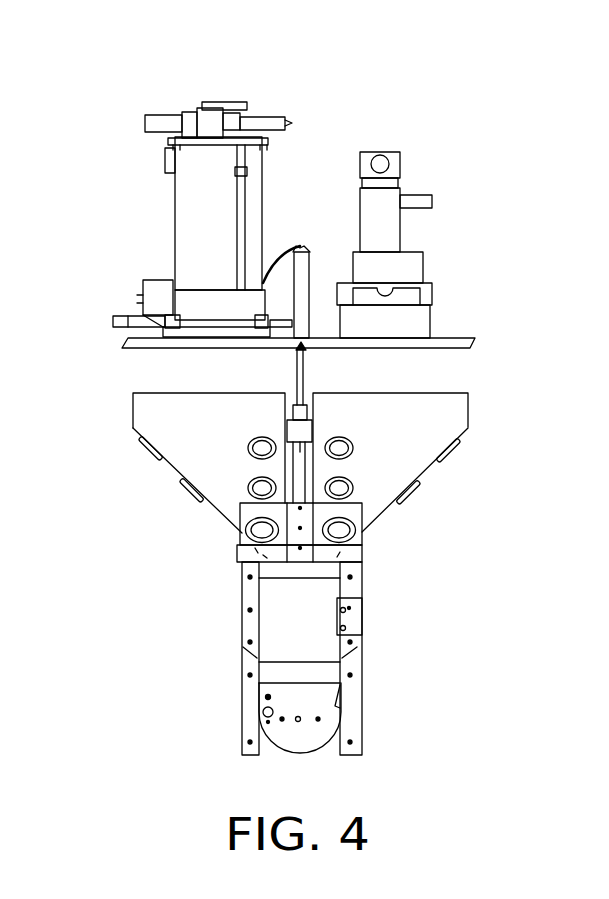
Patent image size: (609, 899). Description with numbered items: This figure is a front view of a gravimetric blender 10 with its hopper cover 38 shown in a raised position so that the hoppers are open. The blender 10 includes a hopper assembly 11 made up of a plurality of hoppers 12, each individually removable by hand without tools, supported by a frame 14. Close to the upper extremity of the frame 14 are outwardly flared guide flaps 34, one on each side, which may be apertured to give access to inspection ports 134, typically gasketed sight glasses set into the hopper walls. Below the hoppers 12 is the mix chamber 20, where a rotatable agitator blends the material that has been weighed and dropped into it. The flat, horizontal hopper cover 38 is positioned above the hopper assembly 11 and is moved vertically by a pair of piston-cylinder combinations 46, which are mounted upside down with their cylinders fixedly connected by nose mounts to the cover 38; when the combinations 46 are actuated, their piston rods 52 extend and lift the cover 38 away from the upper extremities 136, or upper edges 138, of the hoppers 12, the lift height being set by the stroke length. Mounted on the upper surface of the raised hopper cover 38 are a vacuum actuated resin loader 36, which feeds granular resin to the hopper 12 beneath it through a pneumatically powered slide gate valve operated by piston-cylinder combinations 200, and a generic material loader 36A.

The gravimetric blender 10 is at (382, 658).
The hopper assembly 11 is at (327, 466).
The hoppers 12 is at (195, 453).
The frame 14 is at (358, 653).
The mix chamber 20 is at (325, 725).
The outwardly flared guide flaps 34 is at (348, 512).
The vacuum actuated resin loader 36 is at (165, 200).
The generic material loader 36A is at (413, 185).
The hopper cover 38 is at (447, 349).
The piston-cylinder combination 46 is at (318, 258).
The piston rod 52 is at (305, 356).
The inspection ports 134 is at (243, 487).
The upper edges of the hopper walls 136 is at (402, 392).
The upper edges of hoppers 138 is at (281, 247).
The piston-cylinder combinations 200 is at (113, 320).